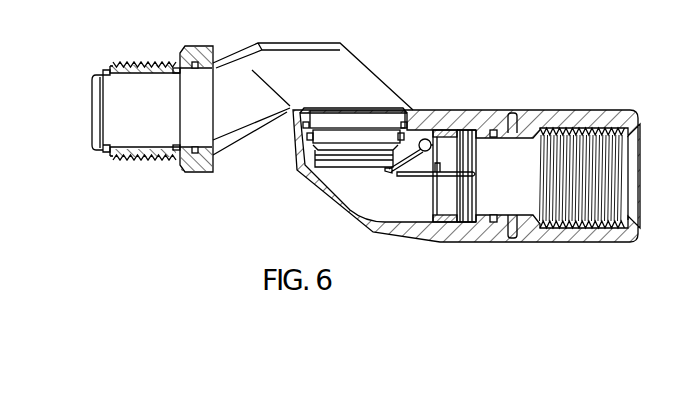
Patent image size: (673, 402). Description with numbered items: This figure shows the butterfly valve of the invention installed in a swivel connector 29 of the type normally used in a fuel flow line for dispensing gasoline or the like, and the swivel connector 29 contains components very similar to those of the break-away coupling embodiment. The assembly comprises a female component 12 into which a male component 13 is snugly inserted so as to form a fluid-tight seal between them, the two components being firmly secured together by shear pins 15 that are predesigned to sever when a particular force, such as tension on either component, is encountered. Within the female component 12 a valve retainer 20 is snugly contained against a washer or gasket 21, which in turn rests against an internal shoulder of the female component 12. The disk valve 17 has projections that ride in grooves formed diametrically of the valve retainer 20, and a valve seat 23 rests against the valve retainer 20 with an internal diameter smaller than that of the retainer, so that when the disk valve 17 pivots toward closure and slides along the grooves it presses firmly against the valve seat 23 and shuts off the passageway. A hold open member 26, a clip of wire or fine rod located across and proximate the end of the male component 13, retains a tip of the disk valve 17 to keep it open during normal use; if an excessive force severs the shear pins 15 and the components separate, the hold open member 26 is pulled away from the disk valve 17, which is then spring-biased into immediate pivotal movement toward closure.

The female component 12 is at (455, 230).
The male component 13 is at (600, 119).
The shear pins 15 is at (513, 114).
The disk valve 17 is at (420, 155).
The valve retainer 20 is at (432, 212).
The gasket 21 is at (428, 191).
The valve seat 23 is at (452, 130).
The hold open member 26 is at (468, 193).
The swivel connector 29 is at (447, 95).